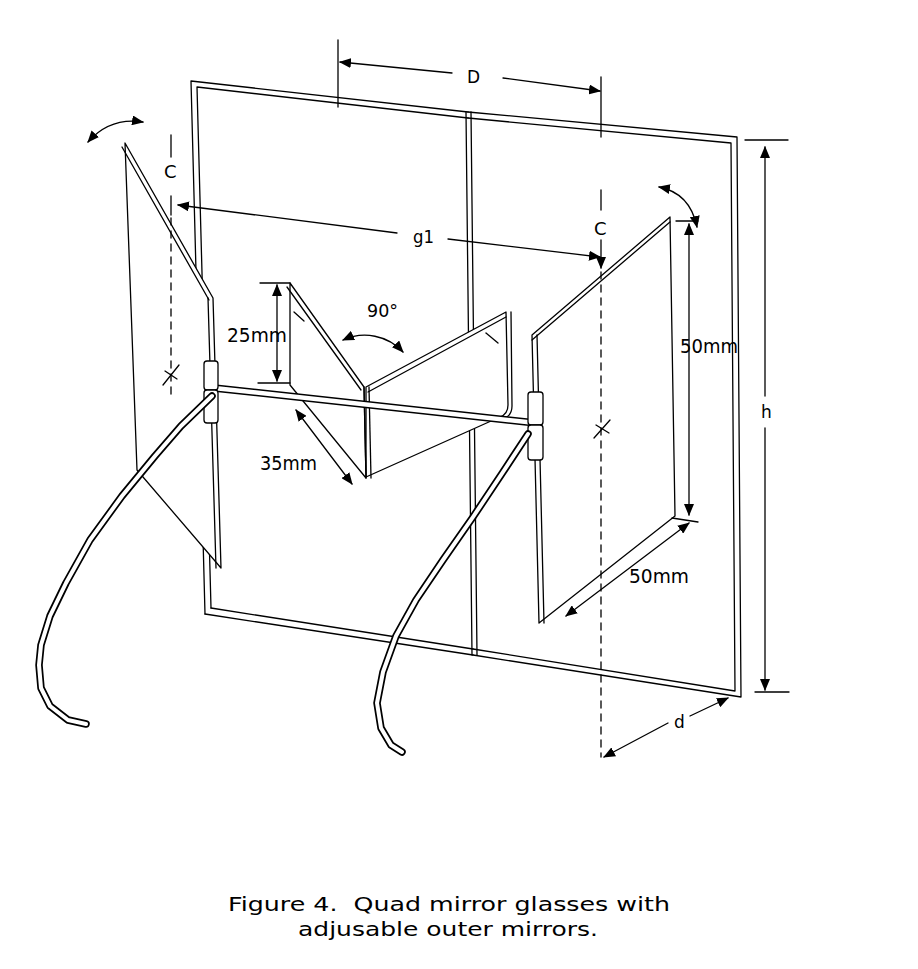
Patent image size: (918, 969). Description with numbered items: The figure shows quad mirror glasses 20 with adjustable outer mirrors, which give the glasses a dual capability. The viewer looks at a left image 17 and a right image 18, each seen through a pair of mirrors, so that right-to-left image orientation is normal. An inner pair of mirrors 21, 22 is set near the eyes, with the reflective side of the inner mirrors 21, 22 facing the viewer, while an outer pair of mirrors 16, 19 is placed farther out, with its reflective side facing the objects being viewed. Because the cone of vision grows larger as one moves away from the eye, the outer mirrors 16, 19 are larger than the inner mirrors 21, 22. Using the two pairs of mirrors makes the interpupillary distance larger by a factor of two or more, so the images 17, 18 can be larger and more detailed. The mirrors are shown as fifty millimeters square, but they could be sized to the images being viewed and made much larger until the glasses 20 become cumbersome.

The outer mirror 16 is at (152, 290).
The left image 17 is at (236, 108).
The right image 18 is at (625, 141).
The outer mirror 19 is at (571, 540).
The quad mirror glasses 20 is at (388, 668).
The inner mirror 21 is at (408, 441).
The inner mirror 22 is at (343, 430).